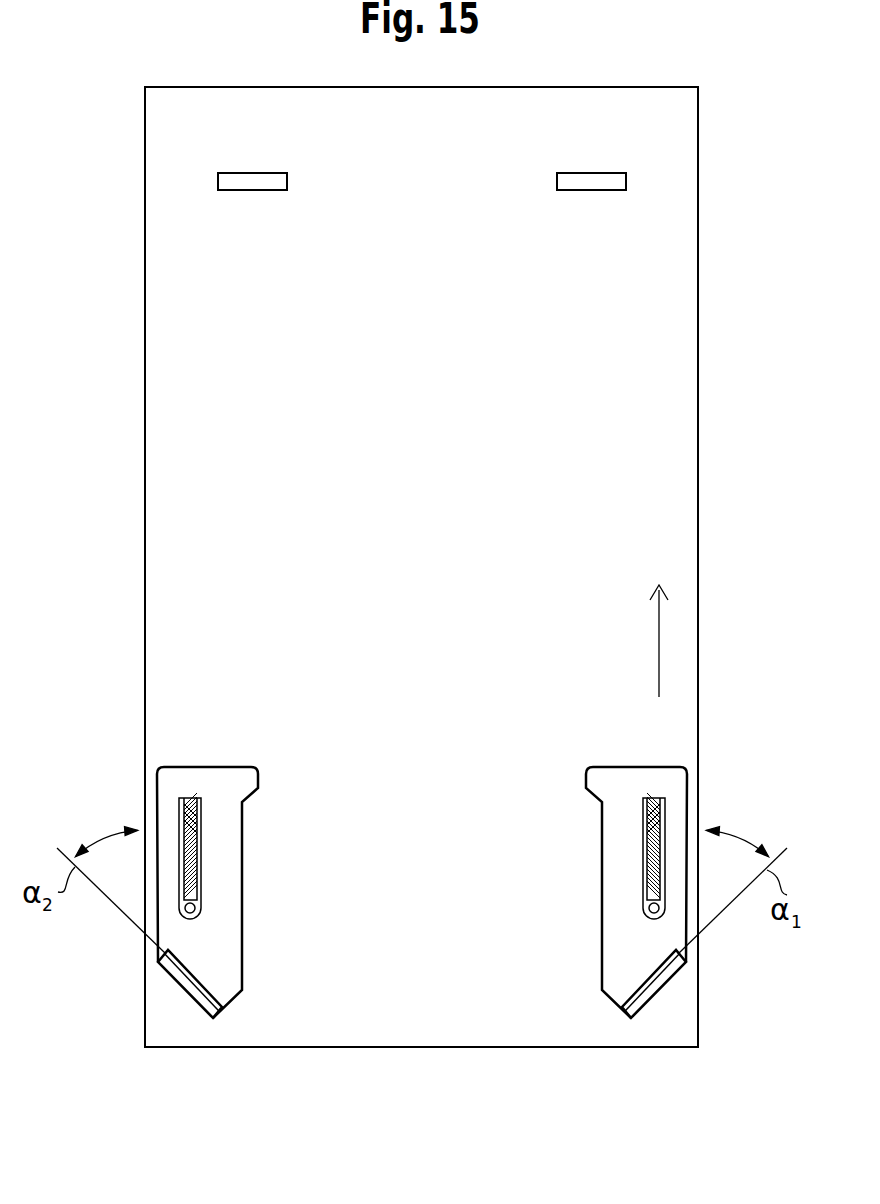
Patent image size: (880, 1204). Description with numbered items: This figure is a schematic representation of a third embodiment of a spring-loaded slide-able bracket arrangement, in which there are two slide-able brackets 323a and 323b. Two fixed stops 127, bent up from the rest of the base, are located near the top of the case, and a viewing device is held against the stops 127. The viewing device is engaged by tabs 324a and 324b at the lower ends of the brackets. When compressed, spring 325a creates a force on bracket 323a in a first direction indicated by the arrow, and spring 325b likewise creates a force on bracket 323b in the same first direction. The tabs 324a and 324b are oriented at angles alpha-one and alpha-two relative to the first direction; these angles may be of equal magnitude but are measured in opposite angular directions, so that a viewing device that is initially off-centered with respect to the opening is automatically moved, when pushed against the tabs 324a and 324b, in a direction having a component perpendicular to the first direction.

The fixed stops 127 is at (253, 178).
The slide-able bracket 323a is at (635, 767).
The slide-able bracket 323b is at (209, 767).
The tab 324a is at (667, 988).
The tab 324b is at (183, 992).
The spring 325a is at (660, 845).
The spring 325b is at (186, 840).